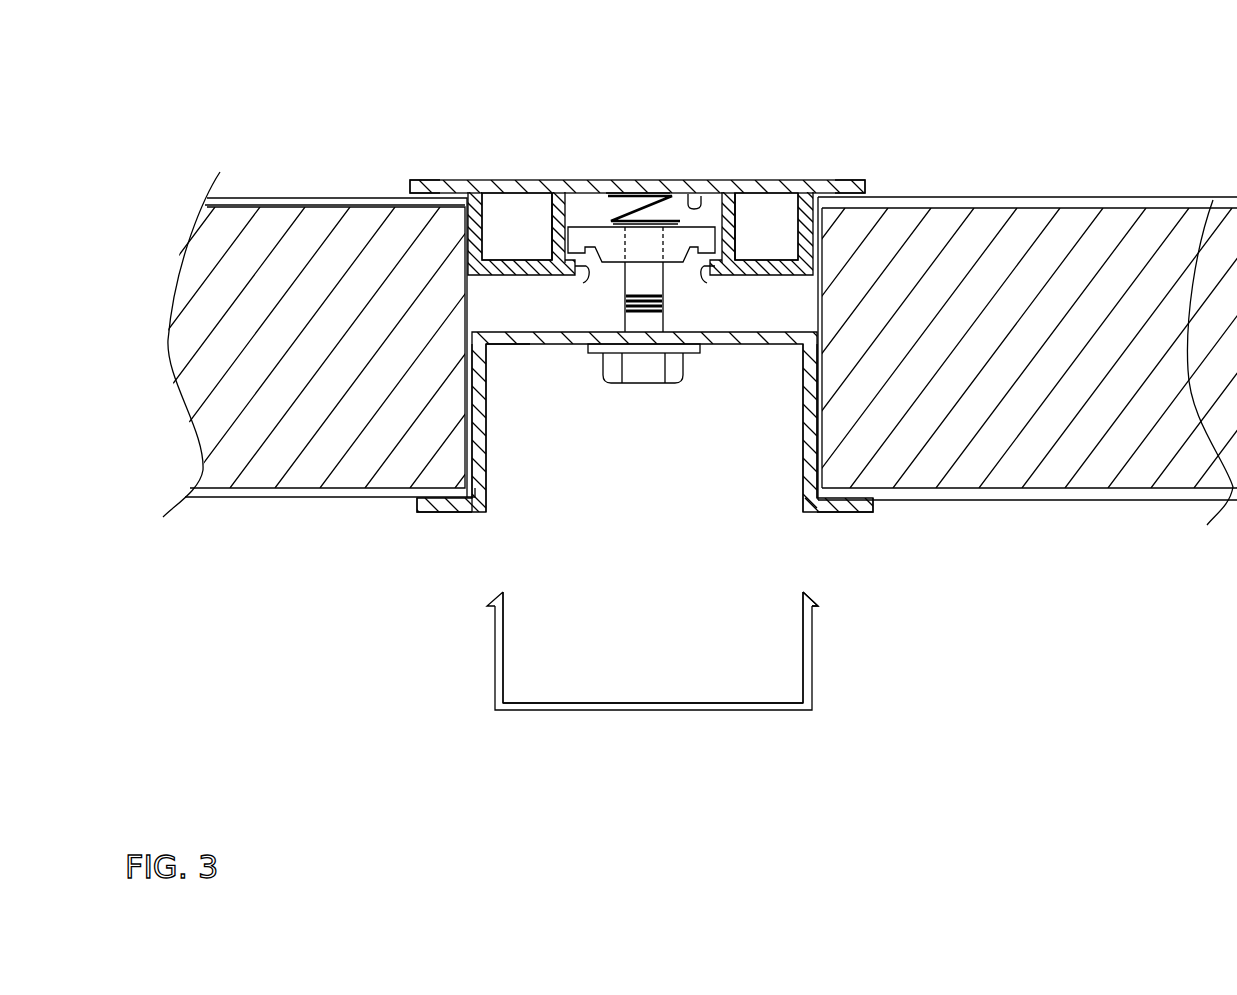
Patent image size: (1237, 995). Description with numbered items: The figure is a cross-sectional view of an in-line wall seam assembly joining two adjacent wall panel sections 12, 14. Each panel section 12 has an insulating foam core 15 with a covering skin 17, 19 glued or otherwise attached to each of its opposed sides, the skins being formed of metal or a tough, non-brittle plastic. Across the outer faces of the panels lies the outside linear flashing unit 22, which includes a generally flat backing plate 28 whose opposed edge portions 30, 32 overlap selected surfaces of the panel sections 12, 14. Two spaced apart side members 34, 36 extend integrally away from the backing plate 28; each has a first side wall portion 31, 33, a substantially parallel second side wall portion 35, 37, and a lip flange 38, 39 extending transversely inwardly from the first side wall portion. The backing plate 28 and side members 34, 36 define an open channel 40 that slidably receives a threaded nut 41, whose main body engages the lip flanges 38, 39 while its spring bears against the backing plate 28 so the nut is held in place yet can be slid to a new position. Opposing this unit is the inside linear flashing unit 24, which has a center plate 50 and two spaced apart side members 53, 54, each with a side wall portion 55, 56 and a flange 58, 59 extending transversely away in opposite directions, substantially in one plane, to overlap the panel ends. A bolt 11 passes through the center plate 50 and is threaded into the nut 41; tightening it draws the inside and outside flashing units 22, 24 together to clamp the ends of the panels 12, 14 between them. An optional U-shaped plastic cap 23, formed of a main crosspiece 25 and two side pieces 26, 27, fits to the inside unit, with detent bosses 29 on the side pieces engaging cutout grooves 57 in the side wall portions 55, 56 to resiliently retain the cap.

The bolt 11 is at (653, 388).
The panel section 12 is at (267, 503).
The wall panel section 14 is at (1060, 507).
The insulating foam core 15 is at (320, 205).
The covering skin 17 is at (267, 195).
The covering skin 19 is at (322, 502).
The outside linear flashing unit 22 is at (728, 163).
The cap 23 is at (683, 713).
The inside linear flashing unit 24 is at (525, 353).
The main crosspiece 25 is at (633, 713).
The side piece 26 is at (507, 670).
The side piece 27 is at (803, 658).
The backing plate 28 is at (605, 177).
The detent boss 29 is at (817, 605).
The edge portion 30 is at (407, 183).
The first side wall portion 31 is at (548, 235).
The edge portion 32 is at (873, 183).
The first side wall portion 33 is at (738, 215).
The side member 34 is at (510, 278).
The second side wall portion 35 is at (491, 226).
The side member 36 is at (767, 278).
The second side wall portion 37 is at (798, 248).
The lip flange 38 is at (584, 272).
The lip flange 39 is at (706, 272).
The open channel 40 is at (699, 194).
The threaded nut 41 is at (585, 225).
The center plate 50 is at (730, 348).
The side member 53 is at (490, 447).
The side member 54 is at (800, 440).
The side wall portion 55 is at (485, 375).
The side wall portion 56 is at (802, 370).
The cutout groove 57 is at (803, 405).
The flange 58 is at (405, 508).
The flange 59 is at (877, 507).